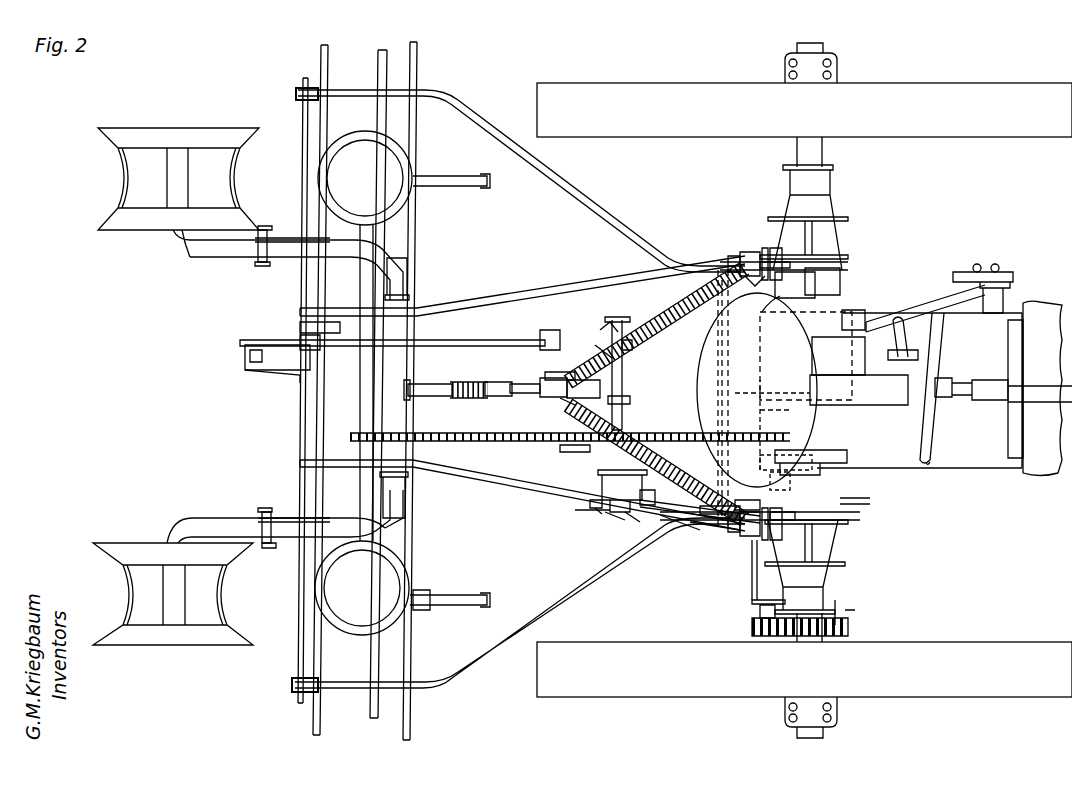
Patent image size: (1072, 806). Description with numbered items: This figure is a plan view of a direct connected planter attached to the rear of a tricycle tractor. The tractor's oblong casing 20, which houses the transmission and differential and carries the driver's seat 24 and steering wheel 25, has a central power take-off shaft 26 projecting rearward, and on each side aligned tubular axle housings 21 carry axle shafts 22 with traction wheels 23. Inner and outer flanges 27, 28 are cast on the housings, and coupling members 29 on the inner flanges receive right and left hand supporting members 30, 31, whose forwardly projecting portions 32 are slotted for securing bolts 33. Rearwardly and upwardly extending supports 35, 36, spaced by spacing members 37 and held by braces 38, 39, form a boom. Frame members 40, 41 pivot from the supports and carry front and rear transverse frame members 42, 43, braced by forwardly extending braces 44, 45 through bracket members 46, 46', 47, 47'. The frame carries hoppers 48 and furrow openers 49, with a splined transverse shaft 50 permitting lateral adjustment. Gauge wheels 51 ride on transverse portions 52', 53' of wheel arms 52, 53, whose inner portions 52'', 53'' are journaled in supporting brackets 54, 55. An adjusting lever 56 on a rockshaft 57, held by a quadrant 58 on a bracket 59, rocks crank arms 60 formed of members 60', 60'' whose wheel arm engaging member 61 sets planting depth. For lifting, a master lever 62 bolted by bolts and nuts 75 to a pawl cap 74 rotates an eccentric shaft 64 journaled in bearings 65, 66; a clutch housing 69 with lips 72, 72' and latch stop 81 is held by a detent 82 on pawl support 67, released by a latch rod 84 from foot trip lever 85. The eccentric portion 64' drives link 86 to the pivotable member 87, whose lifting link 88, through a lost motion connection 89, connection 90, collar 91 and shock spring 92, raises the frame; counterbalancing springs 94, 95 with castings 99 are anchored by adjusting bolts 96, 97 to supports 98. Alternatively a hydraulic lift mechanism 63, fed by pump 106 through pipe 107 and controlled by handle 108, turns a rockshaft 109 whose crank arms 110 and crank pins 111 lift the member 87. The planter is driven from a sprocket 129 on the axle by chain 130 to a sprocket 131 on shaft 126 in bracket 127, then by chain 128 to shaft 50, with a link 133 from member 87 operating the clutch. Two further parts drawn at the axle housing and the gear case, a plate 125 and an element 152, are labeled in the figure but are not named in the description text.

The oblong casing 20 is at (972, 468).
The tubular axle housings 21 is at (825, 175).
The axle shafts 22 is at (820, 45).
The traction wheels 23 is at (945, 92).
The driver's seat 24 is at (820, 418).
The steering wheel 25 is at (948, 326).
The power take-off shaft 26 is at (712, 360).
The inner flanges 27 is at (838, 256).
The outer flanges 28 is at (825, 222).
The coupling members 29 is at (805, 255).
The right hand supporting member 30 is at (745, 512).
The left hand supporting member 31 is at (740, 260).
The forwardly projecting portions 32 is at (762, 252).
The securing bolts 33 is at (732, 256).
The right hand supporting member 35 is at (567, 400).
The left hand supporting member 36 is at (650, 328).
The spacing members 37 is at (545, 385).
The right hand brace 38 is at (640, 418).
The left hand brace 39 is at (643, 355).
The right hand frame member 40 is at (470, 480).
The left hand frame member 41 is at (510, 305).
The front transverse frame member 42 is at (445, 598).
The rear transverse frame member 43 is at (312, 585).
The forwardly extending brace 44 is at (520, 640).
The forwardly extending brace 45 is at (565, 178).
The downwardly extending bracket member 46 is at (376, 665).
The downwardly extending bracket member 46' is at (392, 86).
The downwardly extending bracket member 47 is at (286, 676).
The downwardly extending bracket member 47' is at (290, 390).
The hoppers 48 is at (363, 383).
The furrow openers 49 is at (460, 176).
The transverse shaft 50 is at (360, 403).
The gauge wheels 51 is at (148, 228).
The wheel arm 52 is at (277, 513).
The transversely extending portion 52' is at (158, 524).
The inner transverse portion 52'' is at (421, 510).
The wheel arm 53 is at (275, 265).
The transversely extending portion 53' is at (157, 253).
The inner transverse portion 53'' is at (420, 276).
The supporting bracket 54 is at (406, 500).
The supporting bracket 55 is at (408, 268).
The adjusting lever 56 is at (325, 352).
The transverse rockshaft 57 is at (290, 383).
The adjusting quadrant 58 is at (262, 340).
The rearwardly extending bracket 59 is at (245, 356).
The crank arms 60 is at (283, 380).
The crank member 60' is at (273, 388).
The crank member 60'' is at (267, 389).
The wheel arm engaging member 61 is at (255, 258).
The master lever 62 is at (605, 520).
The hydraulic lift mechanism 63 is at (812, 348).
The eccentric shaft 64 is at (634, 373).
The eccentric crank portion 64' is at (639, 395).
The bearing 65 is at (620, 470).
The bearing 66 is at (599, 321).
The pawl support 67 is at (690, 520).
The clutch housing 69 is at (565, 457).
The circumferential lips 72 is at (563, 532).
The circumferential lips 72' is at (575, 512).
The pawl housing cap 74 is at (588, 524).
The bolts and nuts 75 is at (632, 522).
The latch stop 81 is at (645, 508).
The detent 82 is at (668, 528).
The latch rod 84 is at (720, 532).
The foot trip lever 85 is at (858, 499).
The upwardly extending link 86 is at (591, 343).
The pivotable member 87 is at (520, 396).
The lifting link 88 is at (430, 380).
The lost motion connection 89 is at (445, 340).
The connection 90 is at (445, 398).
The collar 91 is at (490, 398).
The spring 92 is at (470, 380).
The counterbalancing spring 94 is at (565, 414).
The counterbalancing spring 95 is at (712, 330).
The adjusting bolt 96 is at (720, 516).
The adjusting bolt 97 is at (754, 288).
The supports 98 is at (772, 248).
The casting 99 is at (560, 363).
The pump 106 is at (1000, 270).
The housing or pipe 107 is at (945, 292).
The control handle 108 is at (900, 318).
The transverse rockshaft 109 is at (830, 272).
The eccentric crank arms 110 is at (840, 285).
The crank pins 111 is at (819, 403).
The plate 125 is at (806, 381).
The transverse shaft 126 is at (752, 580).
The U-shaped supporting bracket 127 is at (750, 604).
The flexible chain 128 is at (478, 443).
The sprocket 129 is at (835, 612).
The flexible driving chain 130 is at (772, 636).
The sprocket 131 is at (758, 632).
The link 133 is at (712, 440).
The gear 152 is at (815, 450).